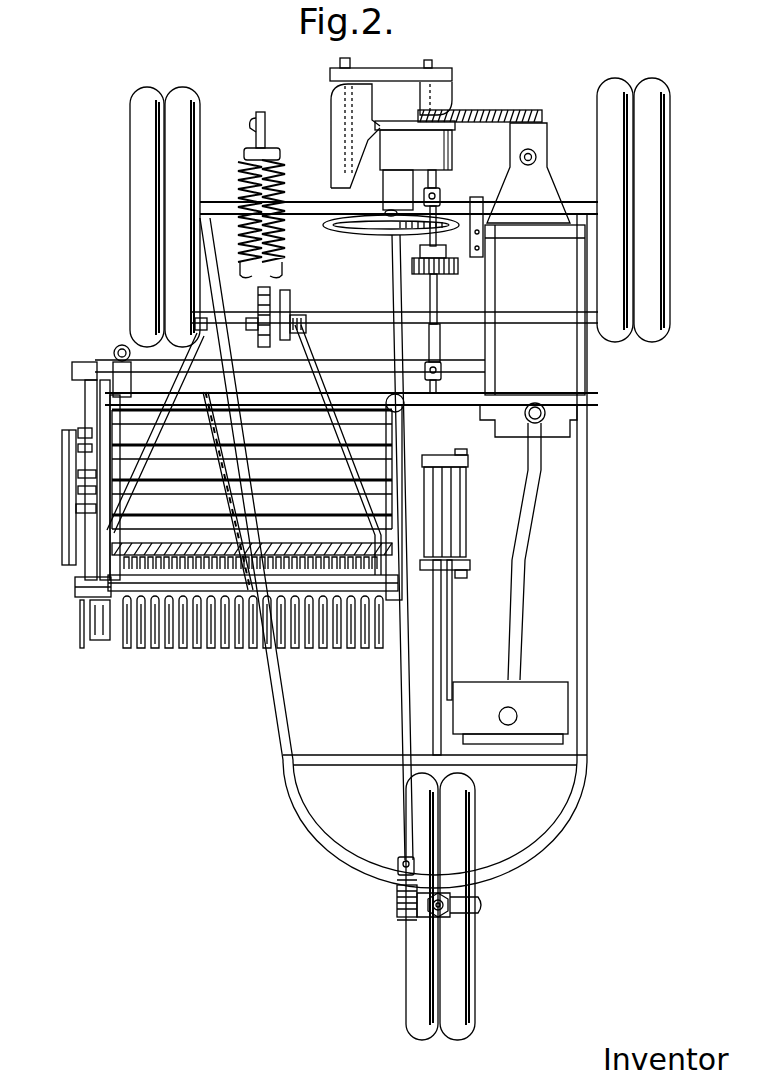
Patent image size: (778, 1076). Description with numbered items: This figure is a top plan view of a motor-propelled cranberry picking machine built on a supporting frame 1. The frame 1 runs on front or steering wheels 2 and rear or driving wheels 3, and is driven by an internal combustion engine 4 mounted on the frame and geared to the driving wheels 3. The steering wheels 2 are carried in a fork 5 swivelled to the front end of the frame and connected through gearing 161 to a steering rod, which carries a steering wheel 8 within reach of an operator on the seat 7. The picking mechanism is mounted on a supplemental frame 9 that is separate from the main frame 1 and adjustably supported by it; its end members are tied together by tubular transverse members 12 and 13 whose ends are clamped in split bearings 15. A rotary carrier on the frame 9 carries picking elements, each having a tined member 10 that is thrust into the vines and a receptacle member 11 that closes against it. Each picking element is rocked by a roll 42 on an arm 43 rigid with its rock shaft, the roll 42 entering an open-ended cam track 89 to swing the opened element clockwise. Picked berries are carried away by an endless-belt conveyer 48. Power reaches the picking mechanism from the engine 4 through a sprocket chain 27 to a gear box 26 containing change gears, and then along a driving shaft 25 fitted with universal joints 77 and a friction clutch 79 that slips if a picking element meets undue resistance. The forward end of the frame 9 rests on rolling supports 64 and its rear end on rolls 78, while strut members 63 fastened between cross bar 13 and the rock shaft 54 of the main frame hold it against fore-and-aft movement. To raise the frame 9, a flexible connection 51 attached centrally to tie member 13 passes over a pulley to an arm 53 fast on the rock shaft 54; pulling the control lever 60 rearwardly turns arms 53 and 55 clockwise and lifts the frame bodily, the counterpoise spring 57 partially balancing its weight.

The supporting frame 1 is at (280, 700).
The front or steering wheels 2 is at (402, 698).
The rear or driving wheels 3 is at (138, 98).
The internal combustion engine 4 is at (545, 366).
The fork 5 is at (482, 910).
The seat 7 is at (330, 118).
The steering wheel 8 is at (353, 233).
The supplemental frame 9 is at (115, 477).
The tined picking member 10 is at (224, 648).
The receptacle member 11 is at (133, 405).
The transverse tie member 12 is at (114, 353).
The transverse tie member 13 is at (163, 592).
The split bearings 15 is at (82, 363).
The driving shaft 25 is at (440, 336).
The gear box 26 is at (452, 148).
The sprocket chain 27 is at (477, 111).
The roll 42 is at (86, 434).
The arm 43 is at (85, 447).
The conveyer 48 is at (452, 523).
The flexible connection 51 is at (133, 541).
The arm 53 is at (196, 325).
The rock shaft 54 is at (350, 318).
The arm 55 is at (248, 330).
The counterpoise spring 57 is at (238, 177).
The control lever 60 is at (285, 322).
The strut members 63 is at (168, 362).
The rolling supports 64 is at (80, 636).
The universal joints 77 is at (444, 198).
The rolls 78 is at (70, 530).
The friction clutch 79 is at (448, 276).
The cam track 89 is at (78, 511).
The steering gearing 161 is at (397, 907).